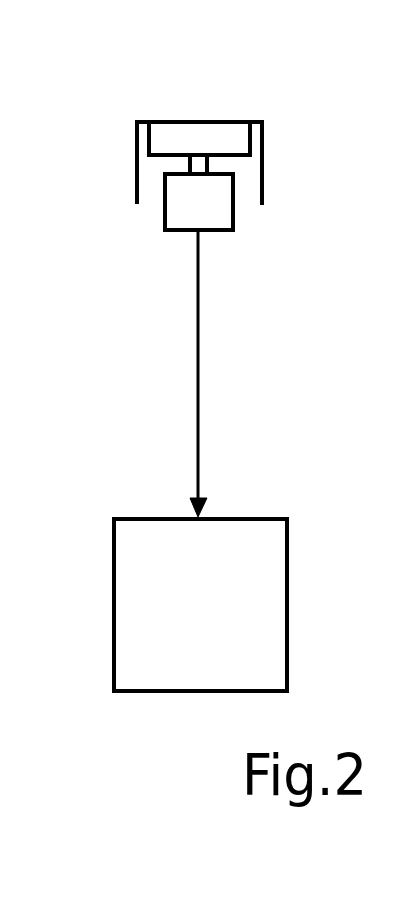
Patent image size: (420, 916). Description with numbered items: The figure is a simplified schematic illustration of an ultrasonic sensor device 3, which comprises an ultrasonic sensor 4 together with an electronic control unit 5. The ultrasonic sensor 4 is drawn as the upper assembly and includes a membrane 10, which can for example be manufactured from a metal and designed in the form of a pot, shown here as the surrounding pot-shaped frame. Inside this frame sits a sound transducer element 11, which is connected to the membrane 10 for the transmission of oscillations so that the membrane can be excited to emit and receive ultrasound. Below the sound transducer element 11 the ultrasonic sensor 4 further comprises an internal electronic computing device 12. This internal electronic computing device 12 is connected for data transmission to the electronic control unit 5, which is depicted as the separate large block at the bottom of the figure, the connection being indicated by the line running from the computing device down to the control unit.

The ultrasonic sensor device 3 is at (88, 90).
The ultrasonic sensor 4 is at (268, 102).
The electronic control unit 5 is at (288, 573).
The membrane 10 is at (263, 170).
The sound transducer element 11 is at (155, 157).
The internal electronic computing device 12 is at (235, 223).